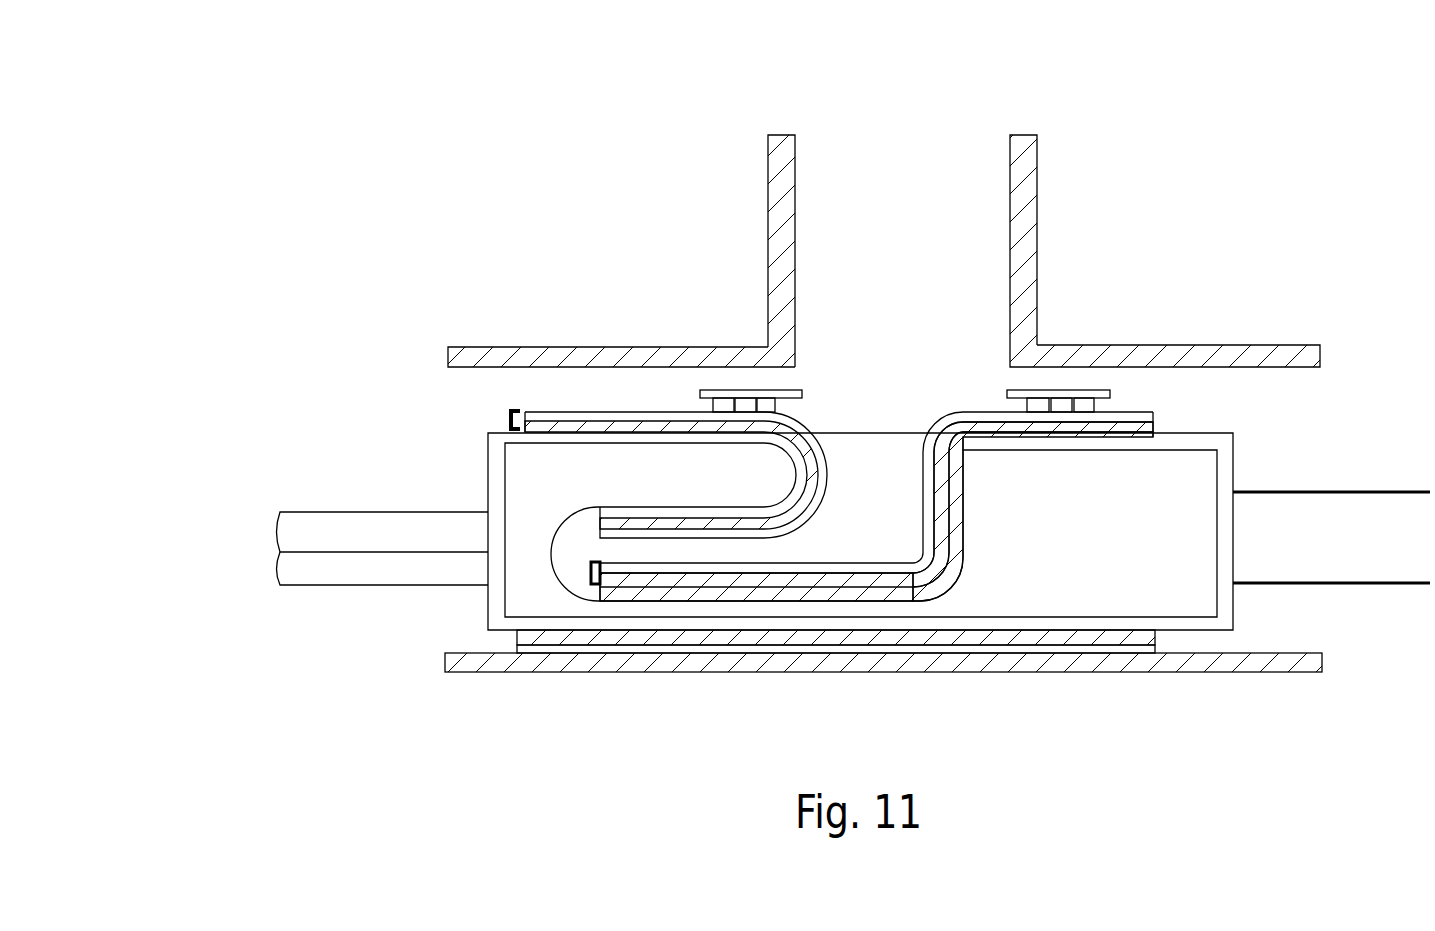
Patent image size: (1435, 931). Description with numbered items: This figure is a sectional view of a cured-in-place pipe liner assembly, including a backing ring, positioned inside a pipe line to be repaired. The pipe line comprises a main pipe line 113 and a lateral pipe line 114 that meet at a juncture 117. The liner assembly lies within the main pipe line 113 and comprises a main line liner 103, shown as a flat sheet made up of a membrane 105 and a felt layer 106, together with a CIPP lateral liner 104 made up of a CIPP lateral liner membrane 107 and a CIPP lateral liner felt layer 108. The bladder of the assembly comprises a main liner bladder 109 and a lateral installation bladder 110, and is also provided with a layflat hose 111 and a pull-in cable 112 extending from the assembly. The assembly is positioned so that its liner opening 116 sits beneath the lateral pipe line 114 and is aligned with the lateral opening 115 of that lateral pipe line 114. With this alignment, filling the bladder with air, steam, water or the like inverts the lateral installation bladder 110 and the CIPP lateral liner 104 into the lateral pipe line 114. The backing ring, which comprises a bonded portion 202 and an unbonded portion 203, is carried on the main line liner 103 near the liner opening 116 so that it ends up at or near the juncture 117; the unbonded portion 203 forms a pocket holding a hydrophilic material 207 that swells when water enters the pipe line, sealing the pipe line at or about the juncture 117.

The main line liner 103 is at (505, 418).
The CIPP lateral liner 104 is at (588, 573).
The membrane 105 is at (1100, 433).
The felt layer 106 is at (1148, 416).
The CIPP lateral liner membrane 107 is at (690, 585).
The CIPP lateral liner felt layer 108 is at (672, 565).
The main liner bladder 109 is at (1157, 625).
The lateral installation bladder 110 is at (963, 477).
The layflat hose 111 is at (323, 512).
The pull-in cable 112 is at (307, 553).
The main pipe line 113 is at (508, 360).
The lateral pipe line 114 is at (781, 184).
The lateral opening 115 is at (928, 362).
The liner opening 116 is at (872, 458).
The juncture 117 is at (1034, 349).
The bonded portion 202 is at (705, 403).
The unbonded portion 203 is at (743, 393).
The hydrophilic material 207 is at (1063, 402).